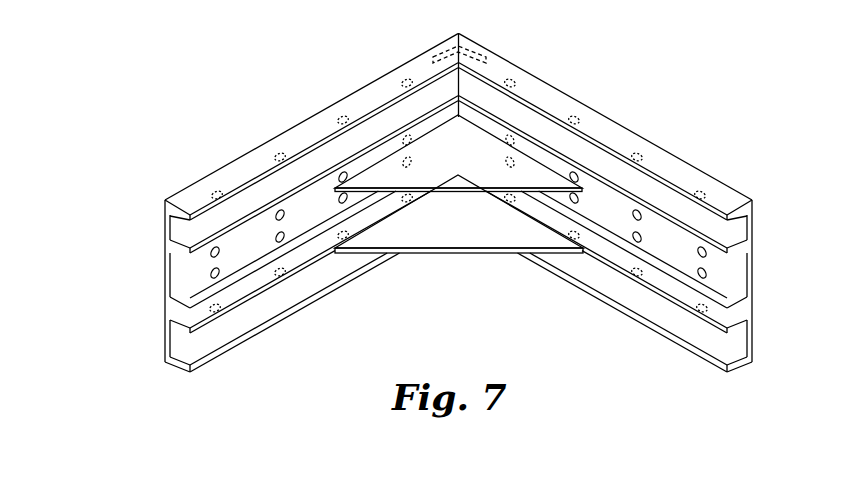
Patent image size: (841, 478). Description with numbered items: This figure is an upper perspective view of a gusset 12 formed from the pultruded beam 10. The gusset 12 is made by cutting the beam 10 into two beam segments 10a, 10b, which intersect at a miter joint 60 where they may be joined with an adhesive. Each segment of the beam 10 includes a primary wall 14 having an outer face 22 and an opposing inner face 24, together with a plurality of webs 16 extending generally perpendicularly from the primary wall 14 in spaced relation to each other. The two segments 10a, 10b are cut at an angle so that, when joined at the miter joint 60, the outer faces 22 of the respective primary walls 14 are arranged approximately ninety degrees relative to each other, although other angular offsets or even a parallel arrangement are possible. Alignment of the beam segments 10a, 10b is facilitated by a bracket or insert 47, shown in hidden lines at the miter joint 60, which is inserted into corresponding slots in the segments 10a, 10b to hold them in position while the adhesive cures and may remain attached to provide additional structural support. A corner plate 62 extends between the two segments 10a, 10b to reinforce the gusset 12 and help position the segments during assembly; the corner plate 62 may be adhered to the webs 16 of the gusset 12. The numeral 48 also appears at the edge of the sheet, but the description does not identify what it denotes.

The pultruded beam 10 is at (458, 198).
The beam segment 10a is at (270, 134).
The beam segment 10b is at (653, 134).
The gusset 12 is at (457, 215).
The primary wall 14 is at (155, 268).
The web 16 is at (197, 375).
The outer face 22 is at (165, 232).
The inner face 24 is at (178, 285).
The bracket 47 is at (440, 50).
The miter joint 60 is at (461, 33).
The corner plate 62 is at (437, 148).
The element 48 is at (318, 477).